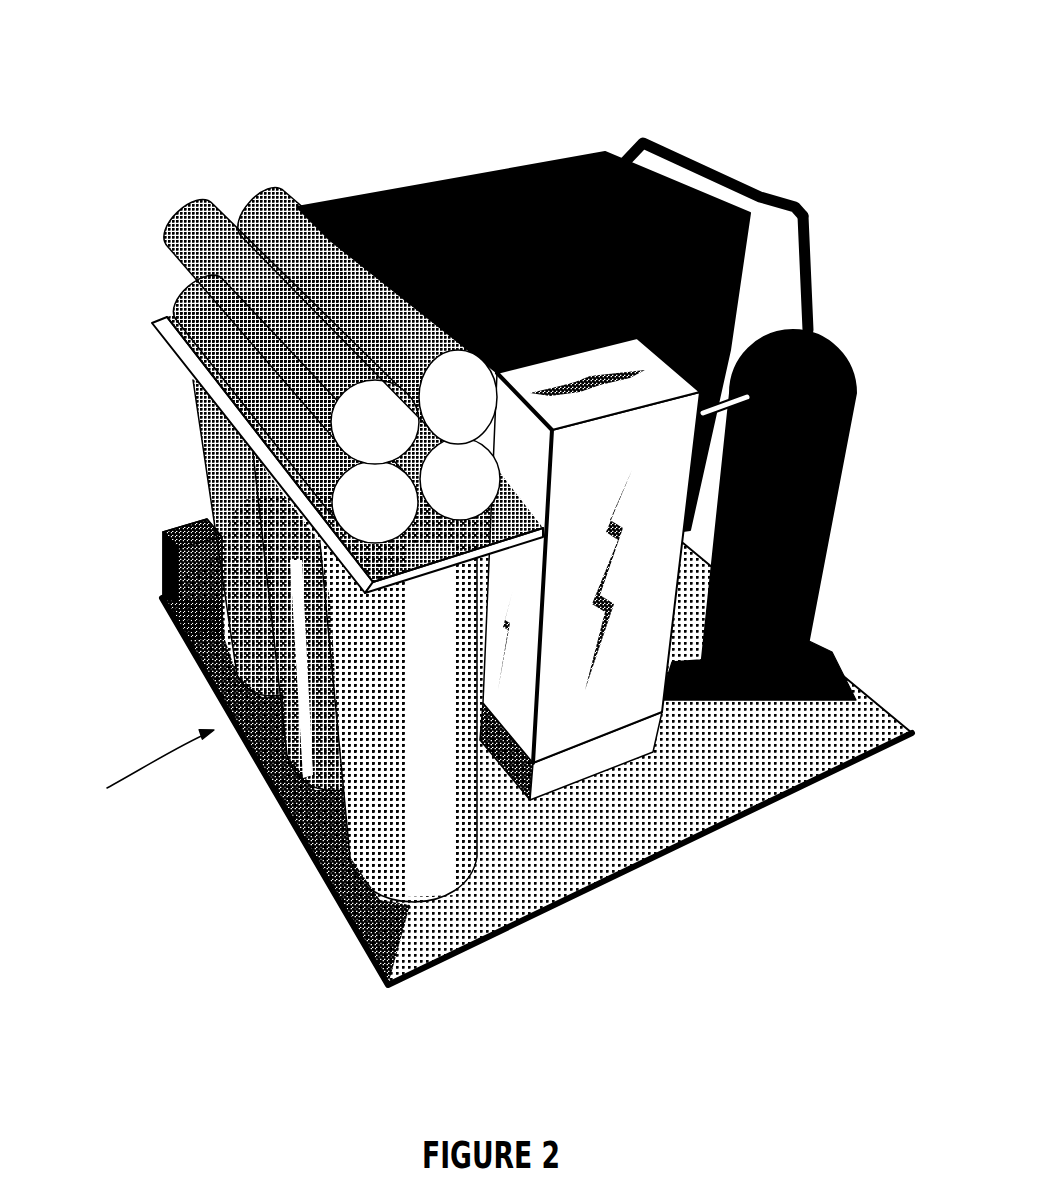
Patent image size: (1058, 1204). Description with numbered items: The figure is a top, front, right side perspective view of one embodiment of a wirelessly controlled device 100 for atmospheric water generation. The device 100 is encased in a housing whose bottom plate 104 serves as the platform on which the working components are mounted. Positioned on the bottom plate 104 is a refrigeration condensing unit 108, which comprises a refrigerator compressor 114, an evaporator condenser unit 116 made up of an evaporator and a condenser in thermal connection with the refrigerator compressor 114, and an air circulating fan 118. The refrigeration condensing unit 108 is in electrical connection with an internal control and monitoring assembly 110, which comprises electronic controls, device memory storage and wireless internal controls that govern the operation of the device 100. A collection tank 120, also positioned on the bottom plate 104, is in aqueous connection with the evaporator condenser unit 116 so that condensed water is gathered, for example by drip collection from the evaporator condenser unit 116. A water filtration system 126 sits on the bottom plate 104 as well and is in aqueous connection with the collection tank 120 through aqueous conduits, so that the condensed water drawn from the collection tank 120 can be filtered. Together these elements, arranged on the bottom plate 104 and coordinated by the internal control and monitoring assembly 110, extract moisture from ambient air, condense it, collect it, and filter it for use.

The wirelessly controlled device 100 is at (376, 124).
The bottom plate 104 is at (410, 992).
The refrigeration condensing unit 108 is at (826, 298).
The internal control and monitoring assembly 110 is at (628, 793).
The refrigerator compressor 114 is at (855, 487).
The evaporator condenser unit 116 is at (558, 145).
The air circulating fan 118 is at (662, 186).
The collection tank 120 is at (146, 531).
The water filtration system 126 is at (150, 298).